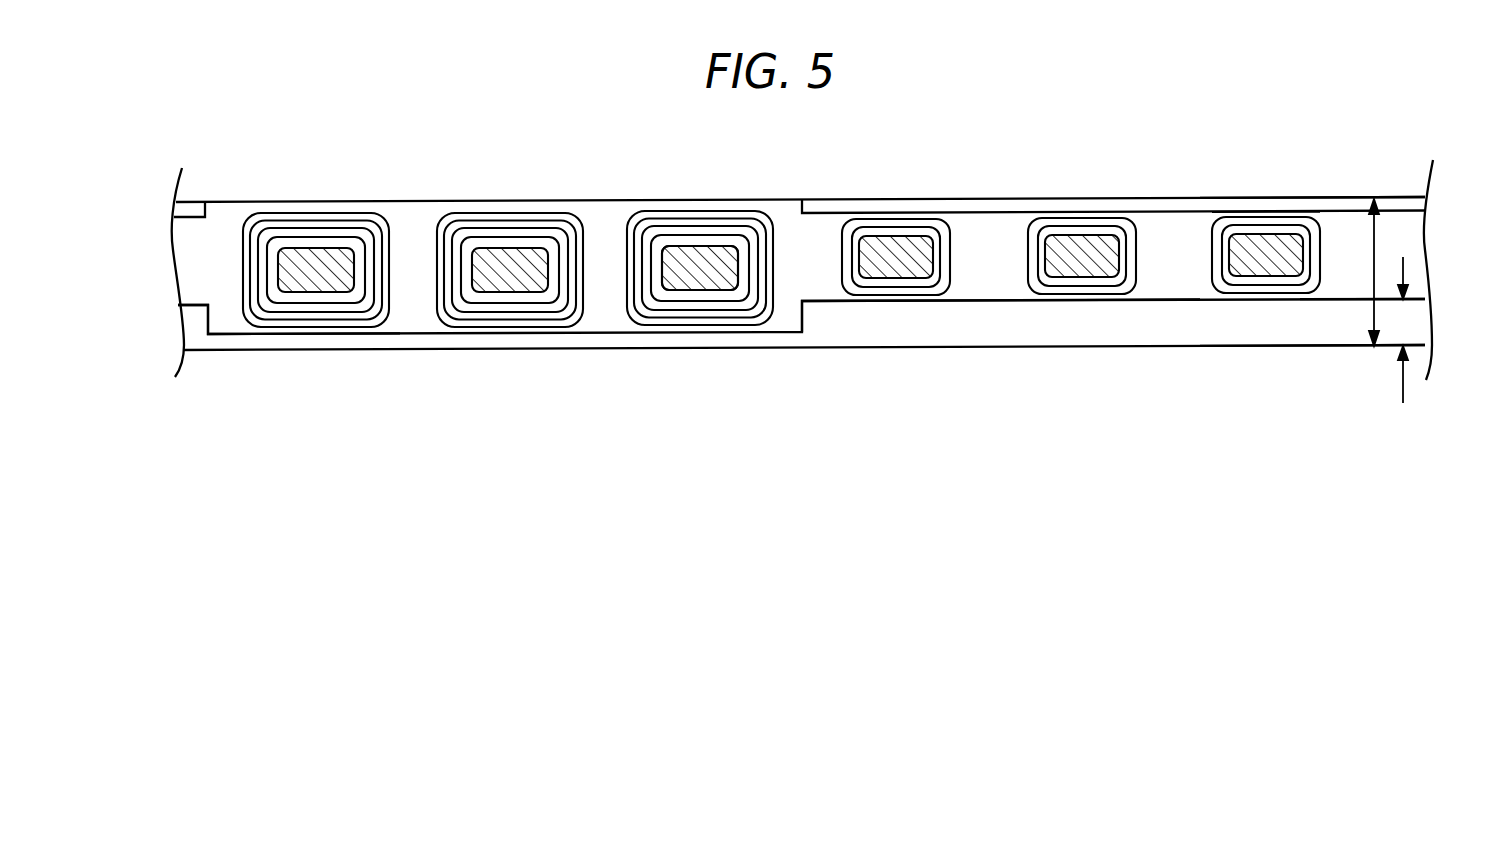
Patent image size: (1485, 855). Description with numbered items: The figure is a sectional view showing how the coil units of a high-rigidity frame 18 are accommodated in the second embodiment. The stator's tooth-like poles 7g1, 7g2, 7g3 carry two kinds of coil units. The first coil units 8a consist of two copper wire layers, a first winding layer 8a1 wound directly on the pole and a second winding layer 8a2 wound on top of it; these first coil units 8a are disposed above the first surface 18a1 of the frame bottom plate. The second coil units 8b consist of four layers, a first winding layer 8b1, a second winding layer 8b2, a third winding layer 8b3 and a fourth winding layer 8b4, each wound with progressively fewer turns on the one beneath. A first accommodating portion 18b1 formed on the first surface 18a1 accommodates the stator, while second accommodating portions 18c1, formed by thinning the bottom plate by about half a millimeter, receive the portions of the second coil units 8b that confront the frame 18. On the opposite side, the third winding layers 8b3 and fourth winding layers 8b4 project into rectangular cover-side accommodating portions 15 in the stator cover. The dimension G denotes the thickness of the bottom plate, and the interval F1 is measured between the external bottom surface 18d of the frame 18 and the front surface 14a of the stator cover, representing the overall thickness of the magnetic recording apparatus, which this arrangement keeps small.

The cover-side accommodating portion 15 is at (212, 215).
The tooth-like pole 7g1 is at (675, 262).
The tooth-like pole 7g2 is at (513, 253).
The tooth-like pole 7g3 is at (318, 267).
The first coil unit 8a is at (1218, 225).
The first winding layer 8a1 is at (1298, 230).
The second winding layer 8a2 is at (1273, 213).
The second coil unit 8b is at (630, 222).
The first winding layer 8b1 is at (690, 290).
The second winding layer 8b2 is at (677, 300).
The third winding layer 8b3 is at (742, 227).
The fourth winding layer 8b4 is at (712, 208).
The front surface of stator cover 14a is at (1385, 195).
The frame 18 is at (1142, 323).
The first surface of bottom plate 18a1 is at (1418, 290).
The first accommodating portion 18b1 is at (980, 285).
The second accommodating portion 18c1 is at (220, 323).
The external bottom surface 18d is at (1348, 343).
The interval F1 is at (1360, 272).
The thickness of bottom plate G is at (1397, 330).